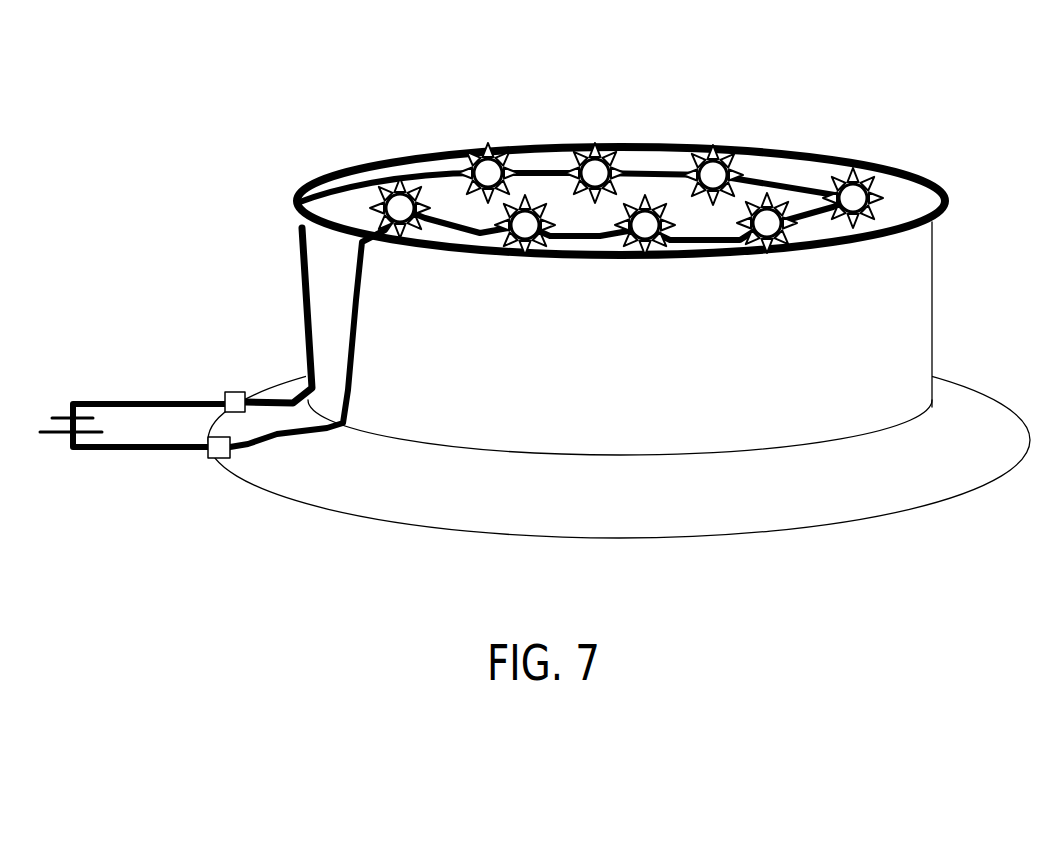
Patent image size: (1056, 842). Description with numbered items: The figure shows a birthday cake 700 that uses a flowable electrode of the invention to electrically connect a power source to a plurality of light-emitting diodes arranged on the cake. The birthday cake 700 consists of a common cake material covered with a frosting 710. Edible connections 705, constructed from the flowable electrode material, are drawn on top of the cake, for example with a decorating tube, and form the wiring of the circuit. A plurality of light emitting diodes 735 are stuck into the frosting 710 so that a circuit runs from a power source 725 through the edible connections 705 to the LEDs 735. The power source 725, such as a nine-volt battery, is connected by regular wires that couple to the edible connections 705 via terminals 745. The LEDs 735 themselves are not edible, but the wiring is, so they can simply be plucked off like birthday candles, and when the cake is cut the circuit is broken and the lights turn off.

The birthday cake 700 is at (535, 304).
The edible connections 705 is at (352, 283).
The frosting 710 is at (672, 372).
The power source 725 is at (96, 474).
The light emitting diodes 735 is at (713, 150).
The terminals 745 is at (219, 459).